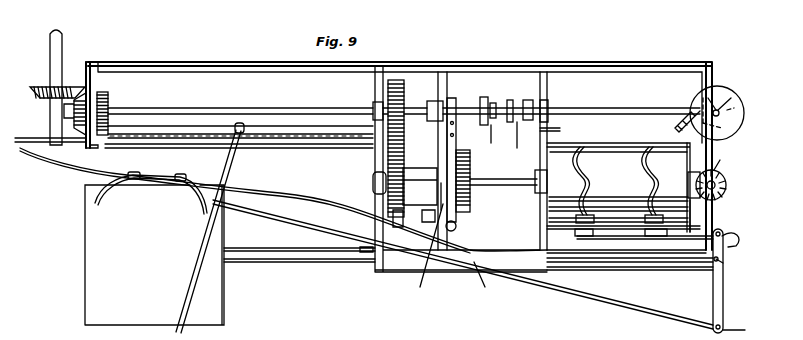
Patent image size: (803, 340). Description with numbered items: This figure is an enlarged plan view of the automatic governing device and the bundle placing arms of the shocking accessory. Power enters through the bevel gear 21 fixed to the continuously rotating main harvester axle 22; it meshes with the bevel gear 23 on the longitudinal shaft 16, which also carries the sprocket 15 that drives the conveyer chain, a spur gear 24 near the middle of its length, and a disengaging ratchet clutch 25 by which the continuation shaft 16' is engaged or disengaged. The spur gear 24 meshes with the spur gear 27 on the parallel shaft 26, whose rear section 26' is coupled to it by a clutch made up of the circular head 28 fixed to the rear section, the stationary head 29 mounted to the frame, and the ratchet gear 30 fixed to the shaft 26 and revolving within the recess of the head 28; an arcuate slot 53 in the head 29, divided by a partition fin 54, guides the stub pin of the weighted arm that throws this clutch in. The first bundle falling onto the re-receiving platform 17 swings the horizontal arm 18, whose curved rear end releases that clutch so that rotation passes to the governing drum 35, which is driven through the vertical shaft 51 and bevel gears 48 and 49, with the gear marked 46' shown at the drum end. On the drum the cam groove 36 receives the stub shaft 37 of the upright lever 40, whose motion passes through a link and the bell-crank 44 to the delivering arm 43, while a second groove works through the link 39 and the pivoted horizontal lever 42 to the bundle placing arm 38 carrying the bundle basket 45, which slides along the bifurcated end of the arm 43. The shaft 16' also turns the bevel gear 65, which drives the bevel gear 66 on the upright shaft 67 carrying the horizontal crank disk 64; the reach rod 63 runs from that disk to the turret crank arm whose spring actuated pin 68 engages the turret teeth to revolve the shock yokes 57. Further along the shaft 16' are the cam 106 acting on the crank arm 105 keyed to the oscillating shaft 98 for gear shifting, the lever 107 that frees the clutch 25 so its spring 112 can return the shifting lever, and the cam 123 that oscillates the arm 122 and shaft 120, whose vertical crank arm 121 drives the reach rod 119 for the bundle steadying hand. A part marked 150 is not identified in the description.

The sprocket 15 is at (108, 101).
The shaft 16 is at (240, 101).
The continuation shaft 16' is at (571, 100).
The bundle re-receiving platform 17 is at (98, 280).
The horizontal arm 18 is at (280, 262).
The bevel gear 21 is at (45, 88).
The main harvester axle 22 is at (63, 37).
The bevel gear 23 is at (88, 72).
The spur gear 24 is at (405, 102).
The disengaging ratchet clutch 25 is at (486, 100).
The second shaft 26 is at (420, 180).
The rear section of shaft 26 26' is at (508, 195).
The spur gear 27 is at (373, 185).
The circular head 28 is at (467, 206).
The stationary head 29 is at (425, 252).
The ratchet gear 30 is at (693, 172).
The governing drum 35 is at (620, 148).
The cam groove 36 is at (587, 181).
The stub shaft 37 is at (588, 216).
The bundle placing arm 38 is at (603, 300).
The link 39 is at (690, 229).
The upright lever 40 is at (578, 235).
The pivoted horizontal lever 42 is at (724, 283).
The delivering arm 43 is at (292, 190).
The bell-crank 44 is at (737, 244).
The bundle basket 45 is at (190, 195).
The foot 46' is at (642, 242).
The bevel gear 48 is at (727, 182).
The bevel gear 49 is at (722, 171).
The vertical shaft 51 is at (715, 262).
The arcuate slot 53 is at (442, 185).
The partition fin 54 is at (456, 227).
The yokes 57 is at (414, 206).
The reach rod 63 is at (684, 110).
The horizontal crank disk 64 is at (720, 109).
The bevel gear 65 is at (708, 98).
The bevel gear 66 is at (733, 112).
The upright shaft 67 is at (731, 98).
The spring actuated pin 68 is at (746, 330).
The oscillating longitudinal shaft 98 is at (38, 137).
The crank arm 105 is at (516, 148).
The cam 106 is at (520, 95).
The lever 107 is at (490, 137).
The spring 112 is at (453, 120).
The actuating reach rod 119 is at (193, 272).
The longitudinal oscillating shaft 120 is at (278, 126).
The vertical crank arm 121 is at (233, 127).
The arm 122 is at (548, 133).
The cam 123 is at (541, 107).
The link 150 is at (482, 281).